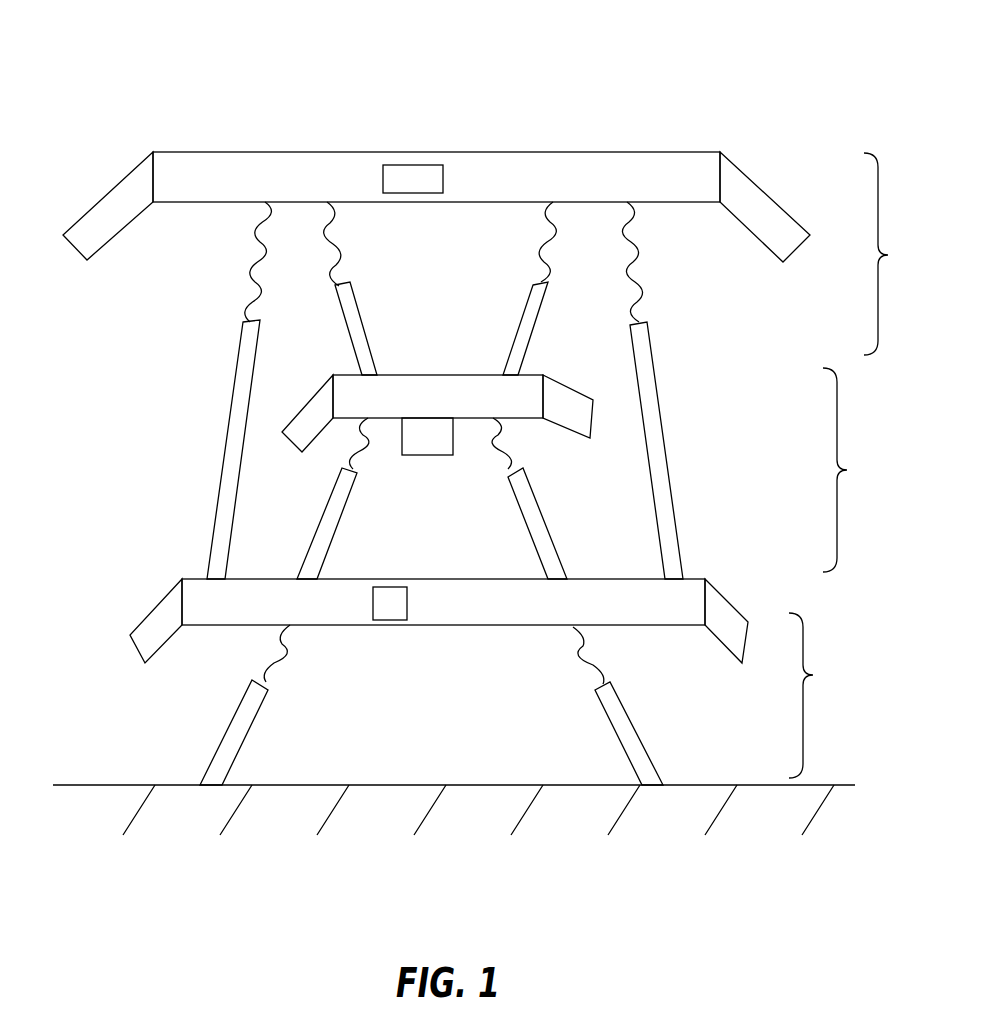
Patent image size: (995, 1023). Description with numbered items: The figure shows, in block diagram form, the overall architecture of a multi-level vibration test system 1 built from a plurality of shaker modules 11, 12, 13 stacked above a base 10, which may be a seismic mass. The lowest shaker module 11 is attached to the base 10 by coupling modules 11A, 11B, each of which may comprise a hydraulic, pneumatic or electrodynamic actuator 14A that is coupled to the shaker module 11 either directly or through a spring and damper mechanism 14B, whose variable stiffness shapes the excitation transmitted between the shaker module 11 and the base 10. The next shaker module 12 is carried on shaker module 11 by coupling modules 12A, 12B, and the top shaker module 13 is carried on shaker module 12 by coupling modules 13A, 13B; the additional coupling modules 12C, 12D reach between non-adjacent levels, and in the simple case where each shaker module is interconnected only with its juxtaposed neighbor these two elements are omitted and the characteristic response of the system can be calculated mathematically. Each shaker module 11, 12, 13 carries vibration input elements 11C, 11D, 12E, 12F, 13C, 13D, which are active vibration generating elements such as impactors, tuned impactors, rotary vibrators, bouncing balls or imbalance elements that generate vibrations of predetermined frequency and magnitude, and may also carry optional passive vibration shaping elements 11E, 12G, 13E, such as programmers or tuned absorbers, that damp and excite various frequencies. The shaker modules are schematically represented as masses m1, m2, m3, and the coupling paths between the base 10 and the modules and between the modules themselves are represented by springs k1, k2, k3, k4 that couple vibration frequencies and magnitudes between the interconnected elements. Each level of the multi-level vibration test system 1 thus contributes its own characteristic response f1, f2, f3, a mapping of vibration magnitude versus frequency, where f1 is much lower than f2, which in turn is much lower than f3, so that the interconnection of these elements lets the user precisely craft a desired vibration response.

The multi-level vibration test system 1 is at (156, 84).
The base 10 is at (83, 785).
The shaker module 11 is at (690, 580).
The coupling module 11A is at (244, 705).
The coupling module 11B is at (672, 706).
The vibration input element 11C is at (150, 612).
The vibration input element 11D is at (722, 607).
The vibration shaping element 11E is at (373, 597).
The shaker module 12 is at (548, 374).
The coupling module 12A is at (318, 528).
The coupling module 12B is at (532, 540).
The coupling module 12C is at (229, 422).
The coupling module 12D is at (655, 370).
The vibration input element 12E is at (300, 415).
The vibration input element 12F is at (573, 437).
The vibration shaping element 12G is at (440, 455).
The shaker module 13 is at (689, 153).
The coupling module 13A is at (358, 300).
The coupling module 13B is at (517, 318).
The vibration input element 13C is at (108, 188).
The vibration input element 13D is at (767, 205).
The vibration shaping element 13E is at (383, 170).
The actuator 14A is at (250, 715).
The spring and damper mechanism 14B is at (285, 650).
The spring constant k1 is at (598, 647).
The spring constant k2 is at (353, 452).
The spring constant k3 is at (330, 230).
The spring constant k4 is at (252, 272).
The mass m1 is at (448, 603).
The mass m2 is at (437, 397).
The mass m3 is at (502, 178).
The characteristic response f1 is at (814, 695).
The characteristic response f2 is at (847, 470).
The characteristic response f3 is at (888, 254).